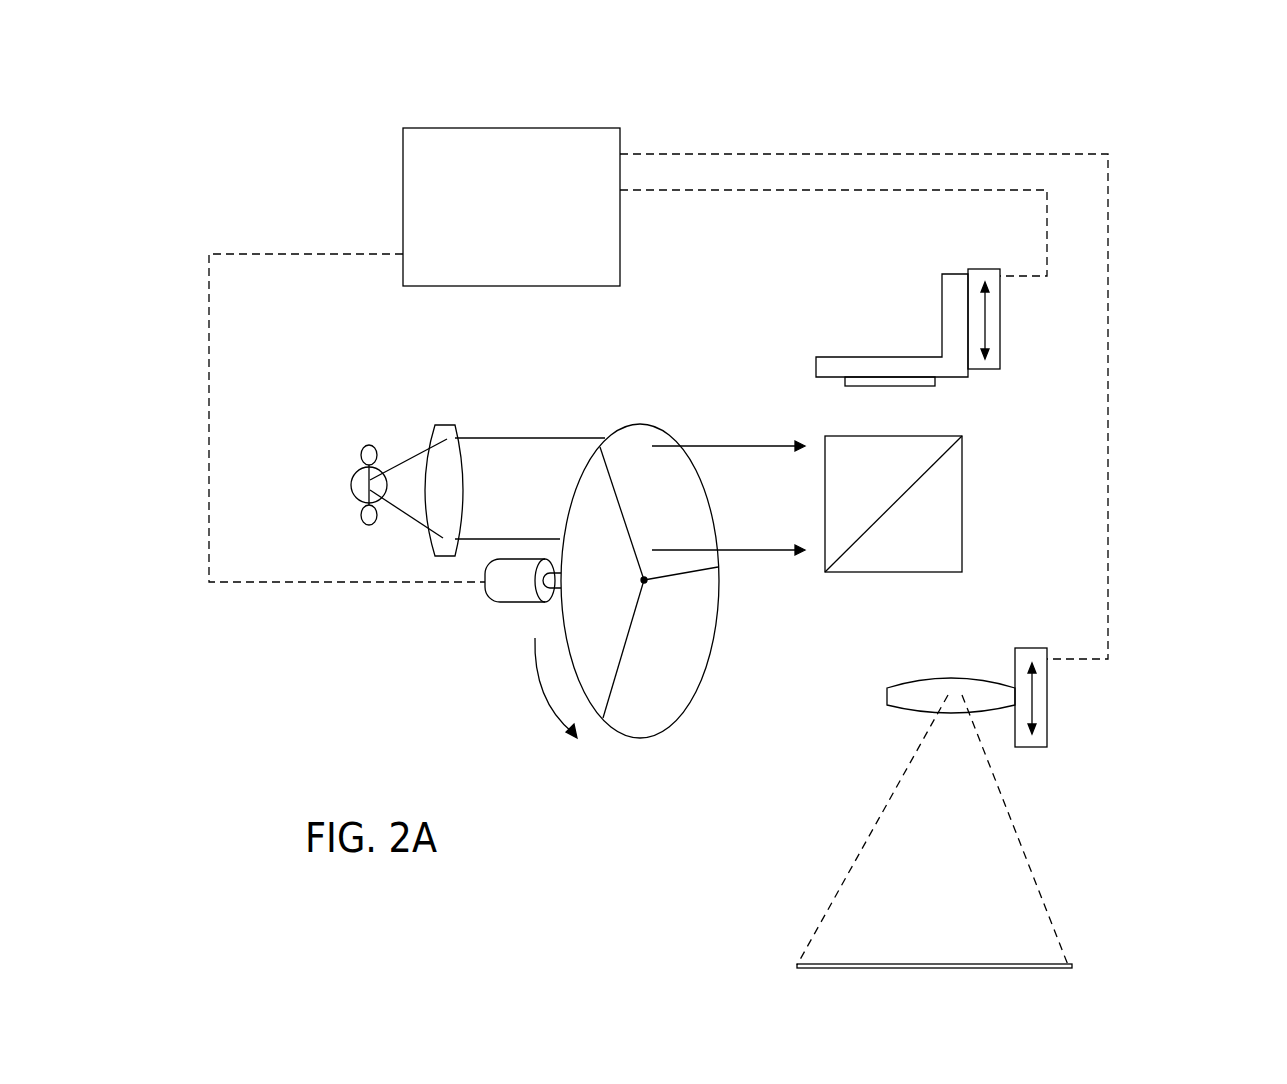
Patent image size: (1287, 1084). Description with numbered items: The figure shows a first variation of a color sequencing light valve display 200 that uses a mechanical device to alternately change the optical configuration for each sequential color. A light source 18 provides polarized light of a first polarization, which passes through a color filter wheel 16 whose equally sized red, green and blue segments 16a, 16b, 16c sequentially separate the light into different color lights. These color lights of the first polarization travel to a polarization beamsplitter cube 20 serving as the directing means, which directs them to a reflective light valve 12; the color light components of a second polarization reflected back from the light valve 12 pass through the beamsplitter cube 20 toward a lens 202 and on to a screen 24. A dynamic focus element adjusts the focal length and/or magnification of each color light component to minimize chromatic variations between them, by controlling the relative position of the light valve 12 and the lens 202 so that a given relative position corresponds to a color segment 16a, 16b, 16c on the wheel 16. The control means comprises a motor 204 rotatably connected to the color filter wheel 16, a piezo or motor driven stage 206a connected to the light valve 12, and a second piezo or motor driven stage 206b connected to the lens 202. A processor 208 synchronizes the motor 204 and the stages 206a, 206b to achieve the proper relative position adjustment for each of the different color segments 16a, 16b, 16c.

The display 200 is at (1158, 189).
The processor 208 is at (425, 127).
The light valve 12 is at (867, 369).
The piezo or motor driven stage 206a is at (1000, 338).
The polarization beamsplitter cube 20 is at (962, 473).
The light source 18 is at (372, 480).
The color filter wheel 16 is at (655, 572).
The red segment 16a is at (642, 435).
The green segment 16b is at (700, 632).
The blue segment 16c is at (603, 510).
The motor 204 is at (490, 593).
The lens 202 is at (905, 680).
The piezo or motor driven stage 206b is at (1047, 718).
The screen 24 is at (810, 968).